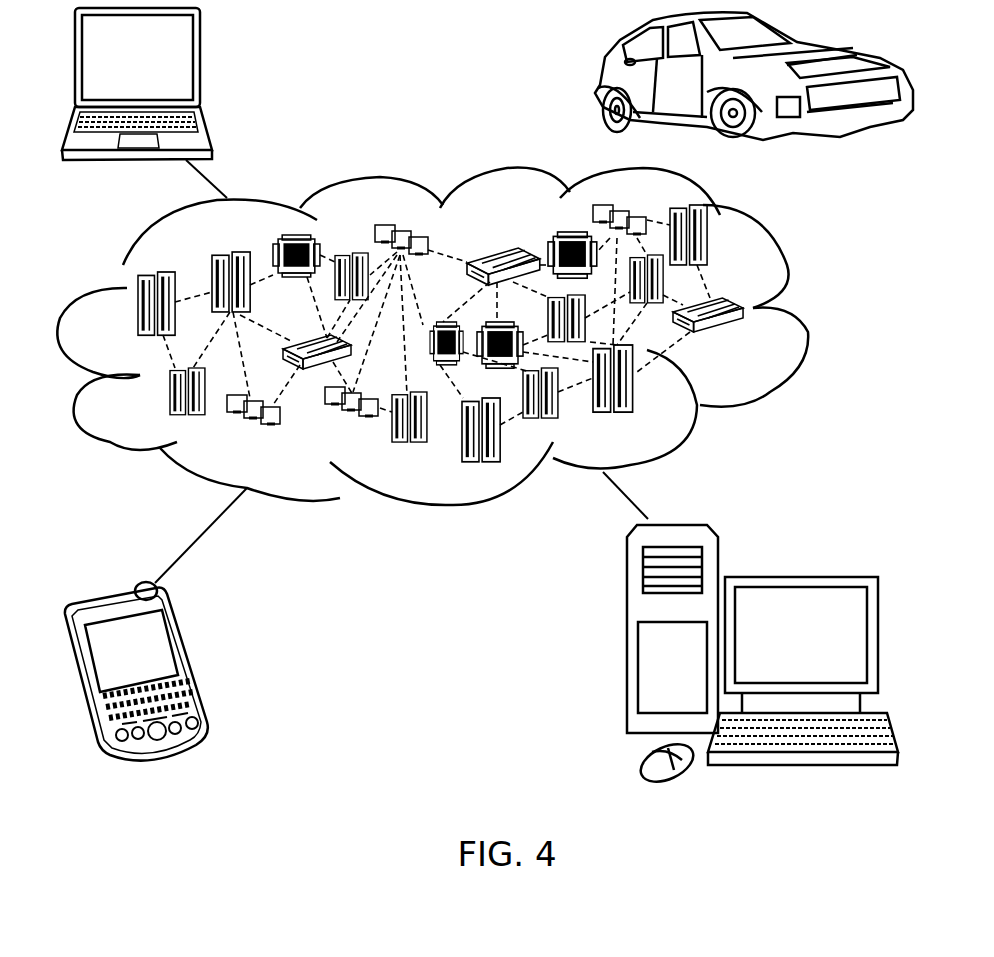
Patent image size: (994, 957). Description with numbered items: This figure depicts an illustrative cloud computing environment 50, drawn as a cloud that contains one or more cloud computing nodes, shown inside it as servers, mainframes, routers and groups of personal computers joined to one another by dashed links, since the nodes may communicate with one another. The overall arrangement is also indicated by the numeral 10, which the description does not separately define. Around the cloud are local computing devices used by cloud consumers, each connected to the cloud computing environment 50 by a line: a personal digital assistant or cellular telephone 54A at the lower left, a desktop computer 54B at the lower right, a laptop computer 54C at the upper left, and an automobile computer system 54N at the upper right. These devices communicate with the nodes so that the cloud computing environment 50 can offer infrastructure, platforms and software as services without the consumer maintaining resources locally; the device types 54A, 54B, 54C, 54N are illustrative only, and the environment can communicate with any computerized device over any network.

The cloud computing environment 10 is at (455, 337).
The cloud computing environment 50 is at (800, 315).
The personal digital assistant or cellular telephone 54A is at (190, 660).
The desktop computer 54B is at (798, 577).
The laptop computer 54C is at (202, 65).
The automobile computer system 54N is at (603, 80).